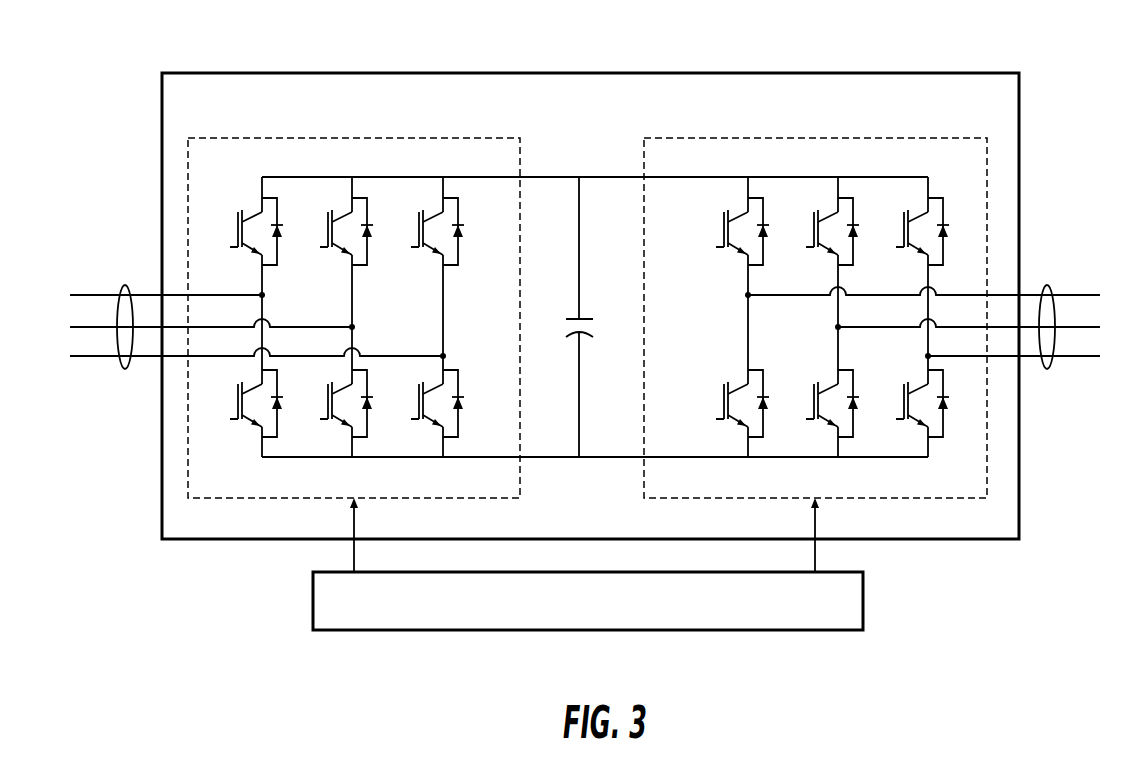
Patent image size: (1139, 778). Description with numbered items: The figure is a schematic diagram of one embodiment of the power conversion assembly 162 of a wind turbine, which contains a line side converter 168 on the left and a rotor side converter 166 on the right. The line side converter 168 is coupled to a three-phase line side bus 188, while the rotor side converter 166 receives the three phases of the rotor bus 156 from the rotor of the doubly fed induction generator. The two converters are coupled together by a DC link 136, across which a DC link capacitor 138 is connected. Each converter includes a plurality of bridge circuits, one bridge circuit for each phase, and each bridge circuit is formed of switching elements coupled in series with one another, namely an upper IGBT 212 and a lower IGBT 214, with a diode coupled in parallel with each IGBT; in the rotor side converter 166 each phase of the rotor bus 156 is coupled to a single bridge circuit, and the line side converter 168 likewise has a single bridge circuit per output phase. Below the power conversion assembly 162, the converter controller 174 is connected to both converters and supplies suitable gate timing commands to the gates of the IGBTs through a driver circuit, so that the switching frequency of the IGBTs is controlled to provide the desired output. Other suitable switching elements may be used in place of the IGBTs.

The power conversion assembly 162 is at (667, 73).
The line side converter 168 is at (360, 138).
The rotor side converter 166 is at (815, 294).
The DC link 136 is at (552, 176).
The DC link capacitor 138 is at (587, 318).
The line side bus 188 is at (122, 285).
The rotor bus 156 is at (1045, 286).
The upper IGBT 212 is at (722, 234).
The lower IGBT 214 is at (722, 406).
The converter controller 174 is at (863, 604).